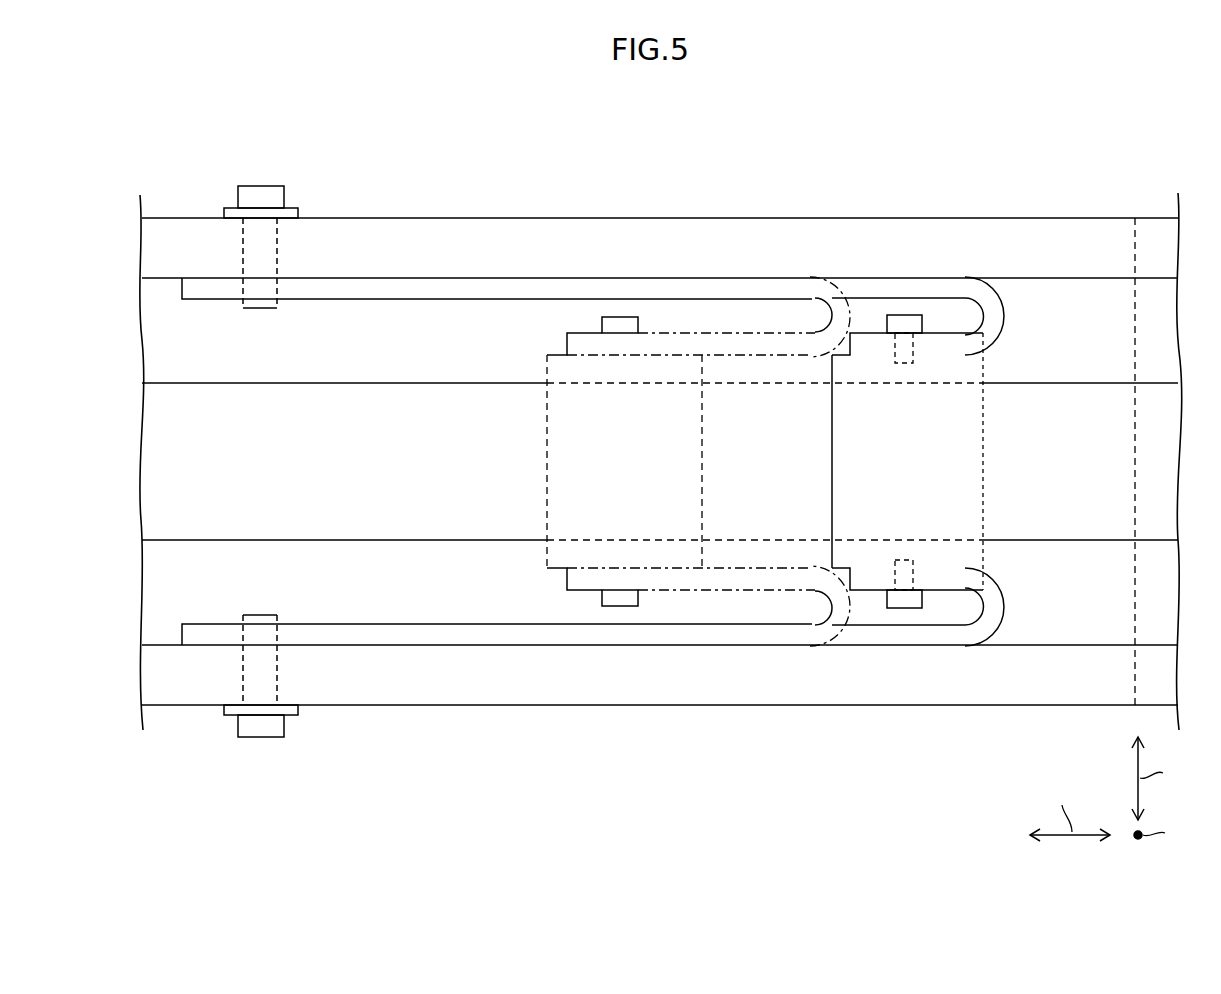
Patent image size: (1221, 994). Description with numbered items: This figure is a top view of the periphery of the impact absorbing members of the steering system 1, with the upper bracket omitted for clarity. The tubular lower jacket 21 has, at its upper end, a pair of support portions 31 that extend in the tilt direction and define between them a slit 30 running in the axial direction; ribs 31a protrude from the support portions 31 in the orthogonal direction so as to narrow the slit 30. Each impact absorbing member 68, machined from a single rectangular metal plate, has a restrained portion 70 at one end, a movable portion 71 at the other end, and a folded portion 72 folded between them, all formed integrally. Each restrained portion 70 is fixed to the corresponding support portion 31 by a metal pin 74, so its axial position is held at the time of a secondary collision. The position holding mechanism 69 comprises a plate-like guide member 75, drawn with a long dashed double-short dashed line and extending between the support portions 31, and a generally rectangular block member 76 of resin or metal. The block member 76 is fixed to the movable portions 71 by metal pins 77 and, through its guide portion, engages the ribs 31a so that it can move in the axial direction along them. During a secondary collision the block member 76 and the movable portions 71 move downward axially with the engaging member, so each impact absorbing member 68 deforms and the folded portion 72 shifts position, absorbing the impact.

The steering system 1 is at (615, 792).
The lower jacket 21 is at (661, 456).
The slit 30 is at (452, 275).
The support portions 31 is at (182, 228).
The ribs 31a is at (296, 374).
The impact absorbing member 68 is at (777, 277).
The position holding mechanism 69 is at (938, 370).
The restrained portion 70 is at (296, 293).
The movable portion 71 is at (652, 342).
The folded portion 72 is at (845, 316).
The metal pin 74 is at (261, 200).
The guide member 75 is at (1137, 226).
The block member 76 is at (547, 441).
The metal pins 77 is at (910, 322).